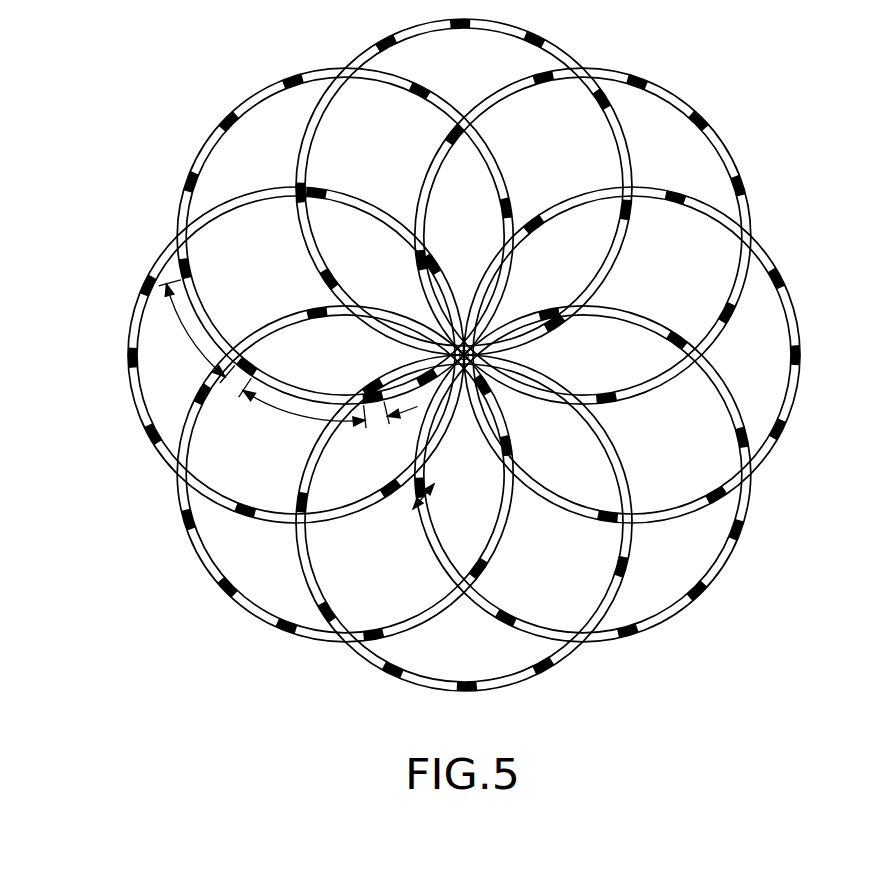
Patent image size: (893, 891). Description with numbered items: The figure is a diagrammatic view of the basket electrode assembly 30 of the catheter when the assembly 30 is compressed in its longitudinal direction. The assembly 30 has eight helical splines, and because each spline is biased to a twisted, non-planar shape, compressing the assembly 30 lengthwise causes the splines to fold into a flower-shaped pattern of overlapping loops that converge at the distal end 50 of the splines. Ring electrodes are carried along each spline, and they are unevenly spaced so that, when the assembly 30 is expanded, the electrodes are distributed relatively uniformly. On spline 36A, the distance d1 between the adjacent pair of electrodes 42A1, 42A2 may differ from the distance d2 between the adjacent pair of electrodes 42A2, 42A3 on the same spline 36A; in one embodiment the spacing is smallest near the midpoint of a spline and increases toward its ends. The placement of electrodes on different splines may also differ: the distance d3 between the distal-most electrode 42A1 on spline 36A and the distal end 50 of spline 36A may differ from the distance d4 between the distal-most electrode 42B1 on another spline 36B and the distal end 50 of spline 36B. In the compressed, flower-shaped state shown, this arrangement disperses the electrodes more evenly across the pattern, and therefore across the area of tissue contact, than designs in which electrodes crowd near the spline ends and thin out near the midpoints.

The basket electrode assembly 30 is at (119, 109).
The spline 36A is at (178, 237).
The spline 36B is at (129, 410).
The electrode 42A1 is at (376, 404).
The electrode 42A2 is at (243, 380).
The electrode 42A3 is at (182, 270).
The electrode 42B1 is at (391, 500).
The distal end 50 is at (426, 318).
The distance d1 is at (285, 417).
The distance d2 is at (190, 335).
The distance d3 is at (398, 378).
The distance d4 is at (458, 446).